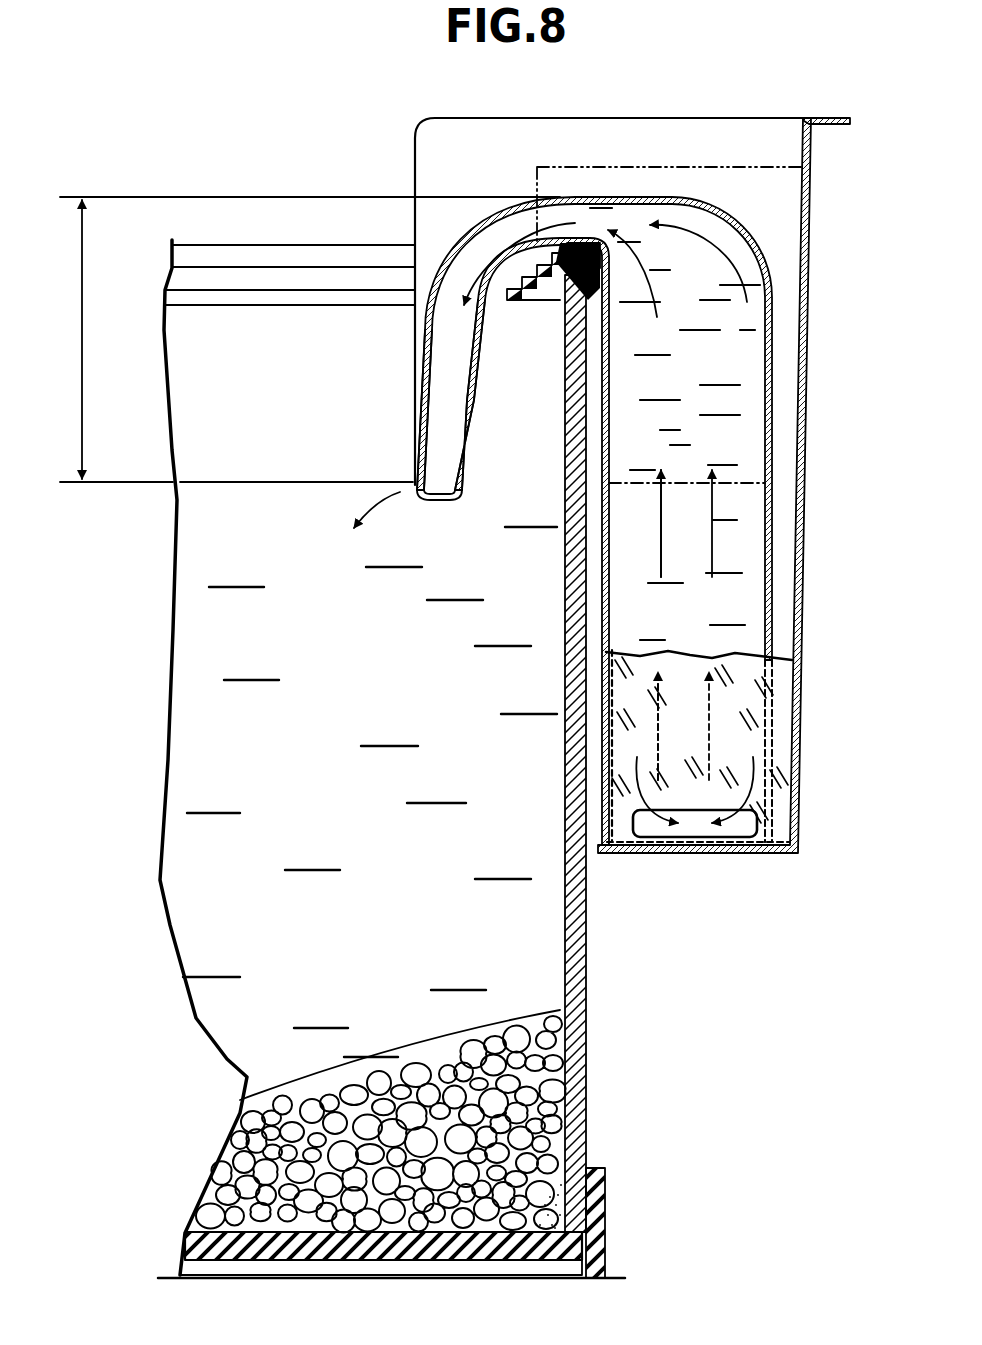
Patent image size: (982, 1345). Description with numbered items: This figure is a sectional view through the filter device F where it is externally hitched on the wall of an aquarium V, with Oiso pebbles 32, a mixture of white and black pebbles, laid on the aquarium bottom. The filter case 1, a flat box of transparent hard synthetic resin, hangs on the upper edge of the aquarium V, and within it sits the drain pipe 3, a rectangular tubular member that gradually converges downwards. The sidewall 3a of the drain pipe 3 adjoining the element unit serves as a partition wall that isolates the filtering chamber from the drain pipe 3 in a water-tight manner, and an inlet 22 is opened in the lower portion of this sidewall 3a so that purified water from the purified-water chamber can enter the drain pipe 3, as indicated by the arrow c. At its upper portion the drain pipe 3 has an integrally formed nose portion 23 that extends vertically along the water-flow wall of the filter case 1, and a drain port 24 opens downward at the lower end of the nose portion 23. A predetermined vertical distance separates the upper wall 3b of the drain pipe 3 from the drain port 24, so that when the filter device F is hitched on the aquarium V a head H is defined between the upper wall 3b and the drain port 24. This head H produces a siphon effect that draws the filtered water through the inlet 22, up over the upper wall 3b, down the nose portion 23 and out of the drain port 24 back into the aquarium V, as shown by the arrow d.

The filter case 1 is at (800, 398).
The drain pipe 3 is at (480, 222).
The sidewall of the drain pipe 3a is at (740, 725).
The upper wall of the drain pipe 3b is at (597, 197).
The inlet 22 is at (700, 838).
The nose portion 23 is at (428, 313).
The drain port 24 is at (442, 457).
The Oiso pebbles 32 is at (412, 1065).
The head H is at (310, 339).
The aquarium V is at (590, 1075).
The filter device F is at (807, 592).
The arrow c is at (755, 780).
The arrow d is at (420, 491).